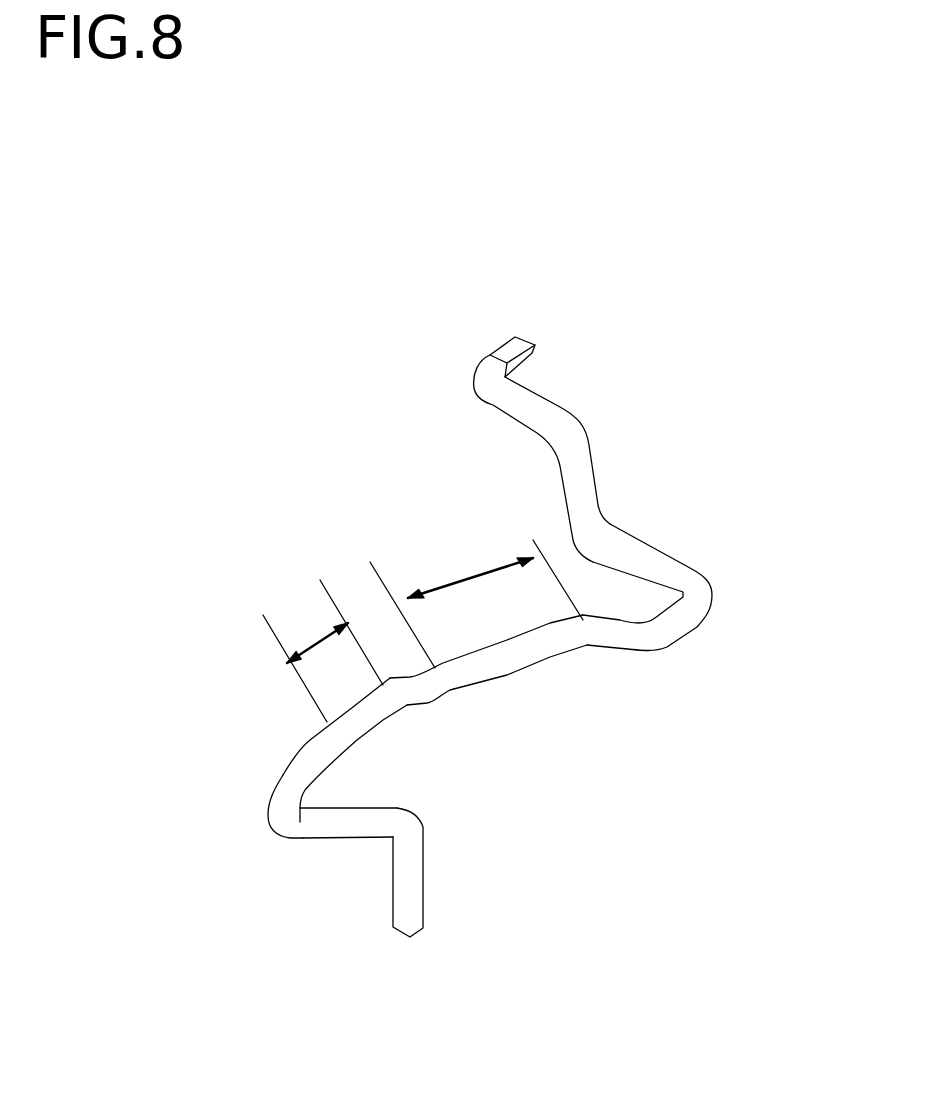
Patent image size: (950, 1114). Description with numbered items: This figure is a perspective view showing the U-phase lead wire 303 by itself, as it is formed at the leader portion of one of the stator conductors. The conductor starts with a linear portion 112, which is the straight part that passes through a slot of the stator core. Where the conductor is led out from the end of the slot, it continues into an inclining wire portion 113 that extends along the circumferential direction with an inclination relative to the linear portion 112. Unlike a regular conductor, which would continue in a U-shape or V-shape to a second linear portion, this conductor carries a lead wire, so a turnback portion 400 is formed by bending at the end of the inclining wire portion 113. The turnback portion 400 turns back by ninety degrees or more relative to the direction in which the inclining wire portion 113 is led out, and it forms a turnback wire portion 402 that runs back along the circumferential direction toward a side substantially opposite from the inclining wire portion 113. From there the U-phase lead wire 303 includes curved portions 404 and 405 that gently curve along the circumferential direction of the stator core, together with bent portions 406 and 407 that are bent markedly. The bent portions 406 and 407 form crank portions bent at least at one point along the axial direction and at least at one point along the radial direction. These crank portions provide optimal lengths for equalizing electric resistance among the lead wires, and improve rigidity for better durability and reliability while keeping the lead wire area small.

The U-phase lead wire 303 is at (625, 454).
The turnback portion 400 is at (282, 822).
The turnback wire portion 402 is at (308, 768).
The curved portion 404 is at (313, 650).
The curved portion 405 is at (465, 578).
The bent portion 406 is at (430, 685).
The bent portion 407 is at (643, 643).
The linear portion 112 is at (415, 877).
The inclining wire portion 113 is at (333, 823).